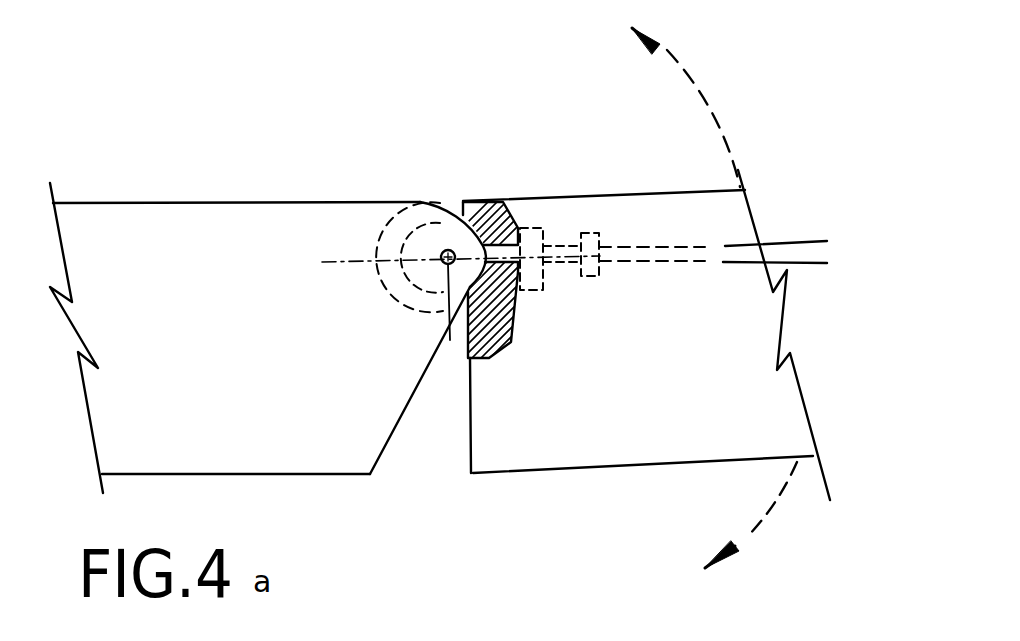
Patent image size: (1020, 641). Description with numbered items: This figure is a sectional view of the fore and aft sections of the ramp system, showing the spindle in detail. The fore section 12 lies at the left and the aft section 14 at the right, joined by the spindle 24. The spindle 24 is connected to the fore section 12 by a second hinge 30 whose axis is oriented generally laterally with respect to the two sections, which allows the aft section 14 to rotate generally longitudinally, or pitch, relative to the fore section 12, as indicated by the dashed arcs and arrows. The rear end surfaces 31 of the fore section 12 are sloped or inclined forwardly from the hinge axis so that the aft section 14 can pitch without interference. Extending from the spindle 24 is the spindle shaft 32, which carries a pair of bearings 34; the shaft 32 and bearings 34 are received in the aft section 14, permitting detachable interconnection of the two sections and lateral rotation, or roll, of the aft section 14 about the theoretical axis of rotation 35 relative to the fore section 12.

The fore section 12 is at (293, 387).
The aft section 14 is at (660, 384).
The spindle 24 is at (481, 216).
The second hinge 30 is at (448, 250).
The rear end surfaces 31 is at (390, 437).
The spindle shaft 32 is at (531, 229).
The bearings 34 is at (594, 231).
The theoretical axis of rotation 35 is at (812, 241).